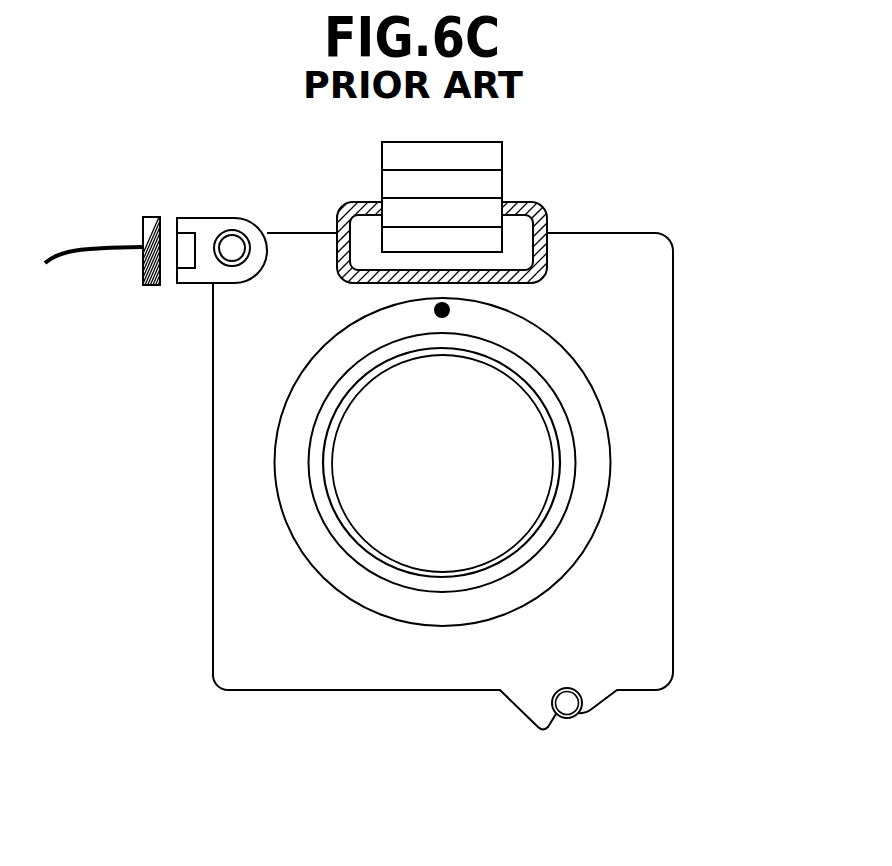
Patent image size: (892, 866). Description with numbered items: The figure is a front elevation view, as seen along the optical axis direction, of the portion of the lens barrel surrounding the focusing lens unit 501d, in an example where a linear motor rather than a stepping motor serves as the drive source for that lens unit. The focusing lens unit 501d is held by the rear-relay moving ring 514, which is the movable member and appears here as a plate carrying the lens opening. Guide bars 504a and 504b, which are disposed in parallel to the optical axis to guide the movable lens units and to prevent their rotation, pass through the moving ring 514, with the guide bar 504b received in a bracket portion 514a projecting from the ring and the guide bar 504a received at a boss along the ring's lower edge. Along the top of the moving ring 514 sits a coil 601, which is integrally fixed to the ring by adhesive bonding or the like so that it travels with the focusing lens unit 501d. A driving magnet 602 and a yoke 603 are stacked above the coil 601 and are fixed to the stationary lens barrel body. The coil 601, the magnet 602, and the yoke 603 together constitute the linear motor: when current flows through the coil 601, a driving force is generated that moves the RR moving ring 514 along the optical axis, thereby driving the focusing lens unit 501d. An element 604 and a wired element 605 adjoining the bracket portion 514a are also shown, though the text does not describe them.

The rear-relay (RR) moving ring 514 is at (653, 390).
The bracket portion of base plate 514a is at (203, 277).
The focusing lens unit 501d is at (518, 502).
The guide bar 504a is at (570, 717).
The guide bar 504b is at (230, 240).
The coil 601 is at (547, 257).
The driving magnet 602 is at (492, 183).
The yoke 603 is at (492, 155).
The sensor element 604 is at (183, 237).
The flexible wire / connector 605 is at (153, 217).